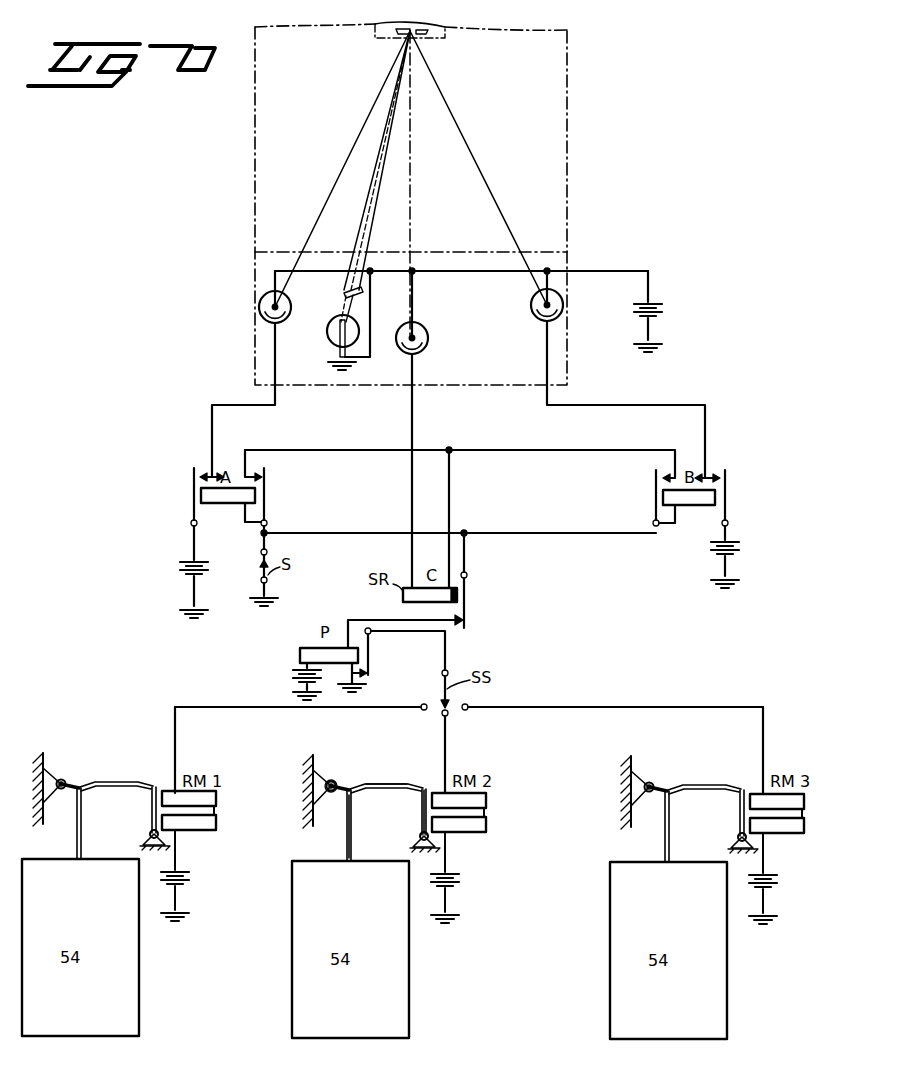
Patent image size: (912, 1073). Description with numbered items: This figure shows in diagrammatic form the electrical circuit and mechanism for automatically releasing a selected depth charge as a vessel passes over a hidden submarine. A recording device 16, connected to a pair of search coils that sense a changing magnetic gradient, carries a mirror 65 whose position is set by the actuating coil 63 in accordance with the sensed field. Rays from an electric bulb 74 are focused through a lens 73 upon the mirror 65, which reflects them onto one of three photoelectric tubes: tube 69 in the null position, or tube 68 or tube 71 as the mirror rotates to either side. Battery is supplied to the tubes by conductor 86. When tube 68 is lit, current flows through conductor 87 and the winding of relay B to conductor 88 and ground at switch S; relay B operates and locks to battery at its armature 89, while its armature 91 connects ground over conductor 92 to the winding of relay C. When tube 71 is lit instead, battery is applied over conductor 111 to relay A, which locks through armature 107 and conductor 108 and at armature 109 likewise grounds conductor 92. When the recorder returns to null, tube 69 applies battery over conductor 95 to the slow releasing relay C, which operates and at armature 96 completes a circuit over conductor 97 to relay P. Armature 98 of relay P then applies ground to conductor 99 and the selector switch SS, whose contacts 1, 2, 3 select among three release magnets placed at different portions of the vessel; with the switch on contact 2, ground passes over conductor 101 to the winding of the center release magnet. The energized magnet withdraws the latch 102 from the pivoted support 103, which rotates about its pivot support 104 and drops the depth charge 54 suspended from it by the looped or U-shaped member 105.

The recording device 16 is at (567, 132).
The actuating coil 63 is at (430, 37).
The mirror 65 is at (393, 38).
The photoelectric tube 68 is at (565, 307).
The photoelectric tube 69 is at (423, 334).
The photoelectric tube 71 is at (260, 316).
The lens 73 is at (346, 294).
The electric bulb 74 is at (332, 341).
The conductor 86 is at (626, 271).
The conductor 87 is at (610, 406).
The conductor 88 is at (533, 533).
The armature 89 is at (729, 496).
The armature 91 is at (655, 499).
The conductor 92 is at (452, 500).
The conductor 95 is at (414, 431).
The armature 96 is at (468, 605).
The conductor 97 is at (376, 620).
The armature 98 is at (371, 640).
The conductor 99 is at (448, 650).
The conductor 101 is at (447, 749).
The latch 102 is at (420, 811).
The pivoted support 103 is at (385, 787).
The pivot support 104 is at (340, 781).
The looped or U-shaped member 105 is at (347, 844).
The armature 107 is at (190, 492).
The conductor 108 is at (190, 540).
The armature 109 is at (268, 498).
The conductor 111 is at (218, 405).
The depth charge 54 is at (413, 896).
The contact 1 is at (302, 719).
The contact 2 is at (457, 724).
The contact 3 is at (612, 719).